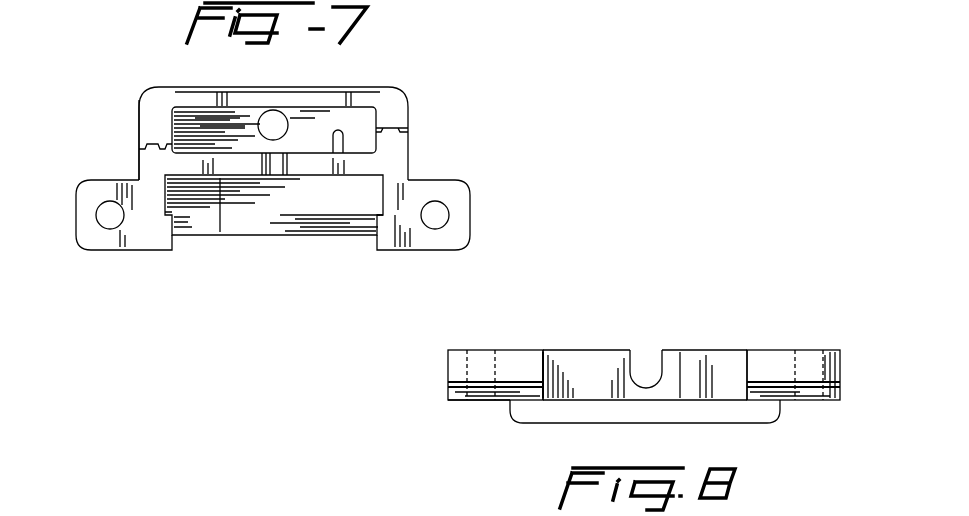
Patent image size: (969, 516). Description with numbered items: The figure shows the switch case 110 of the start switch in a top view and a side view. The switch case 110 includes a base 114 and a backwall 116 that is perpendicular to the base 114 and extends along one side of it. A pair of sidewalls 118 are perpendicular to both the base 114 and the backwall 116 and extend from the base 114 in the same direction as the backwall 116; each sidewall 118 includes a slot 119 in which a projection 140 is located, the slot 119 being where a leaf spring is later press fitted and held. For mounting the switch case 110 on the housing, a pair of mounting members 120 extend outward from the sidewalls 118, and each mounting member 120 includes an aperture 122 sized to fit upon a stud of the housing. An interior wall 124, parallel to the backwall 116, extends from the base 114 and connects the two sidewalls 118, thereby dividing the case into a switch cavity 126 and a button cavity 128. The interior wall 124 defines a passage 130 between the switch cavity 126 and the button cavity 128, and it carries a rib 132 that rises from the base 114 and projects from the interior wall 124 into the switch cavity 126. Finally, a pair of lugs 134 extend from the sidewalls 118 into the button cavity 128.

In FIG. 7, the switch case 110 is at (407, 82).
In FIG. 8, the switch case 110 is at (465, 402).
In FIG. 7, the base 114 is at (310, 130).
In FIG. 8, the base 114 is at (598, 410).
In FIG. 7, the backwall 116 is at (272, 88).
In FIG. 7, the sidewalls 118 is at (139, 115).
In FIG. 7, the slot 119 is at (142, 152).
In FIG. 7, the mounting members 120 is at (76, 228).
In FIG. 8, the mounting members 120 is at (470, 348).
In FIG. 7, the aperture 122 is at (105, 222).
In FIG. 8, the aperture 122 is at (493, 377).
In FIG. 7, the interior wall 124 is at (230, 177).
In FIG. 8, the interior wall 124 is at (685, 372).
In FIG. 7, the switch cavity 126 is at (197, 130).
In FIG. 7, the button cavity 128 is at (318, 212).
In FIG. 8, the button cavity 128 is at (583, 397).
In FIG. 7, the passage 130 is at (272, 178).
In FIG. 8, the passage 130 is at (633, 368).
In FIG. 7, the rib 132 is at (342, 137).
In FIG. 7, the lugs 134 is at (177, 233).
In FIG. 8, the lugs 134 is at (548, 353).
In FIG. 7, the projection 140 is at (157, 145).